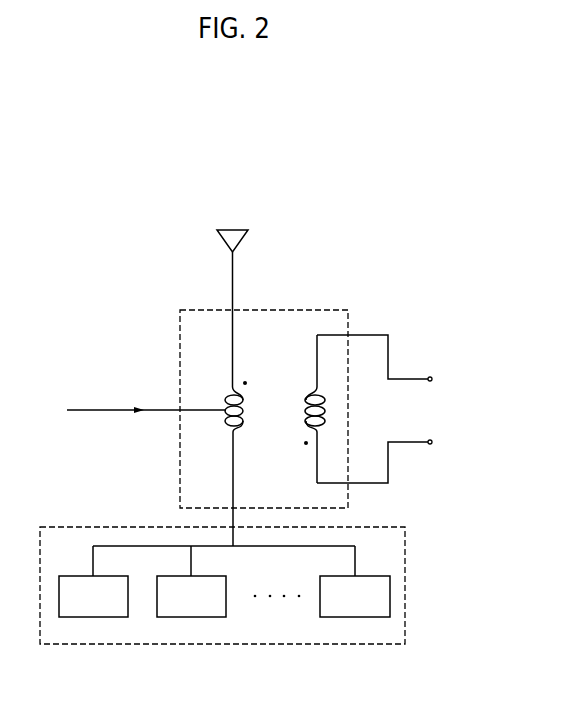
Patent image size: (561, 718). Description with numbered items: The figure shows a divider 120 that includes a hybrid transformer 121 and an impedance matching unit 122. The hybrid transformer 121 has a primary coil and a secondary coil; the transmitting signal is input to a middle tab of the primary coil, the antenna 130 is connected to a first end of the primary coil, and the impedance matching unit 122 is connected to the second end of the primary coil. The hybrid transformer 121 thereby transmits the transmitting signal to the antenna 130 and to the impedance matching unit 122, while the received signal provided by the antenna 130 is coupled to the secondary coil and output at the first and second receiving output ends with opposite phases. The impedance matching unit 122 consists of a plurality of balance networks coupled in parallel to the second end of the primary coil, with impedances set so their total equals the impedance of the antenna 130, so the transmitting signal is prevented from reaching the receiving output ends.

The divider 120 is at (249, 135).
The antenna 130 is at (231, 228).
The hybrid transformer 121 is at (323, 310).
The impedance matching unit 122 is at (405, 578).